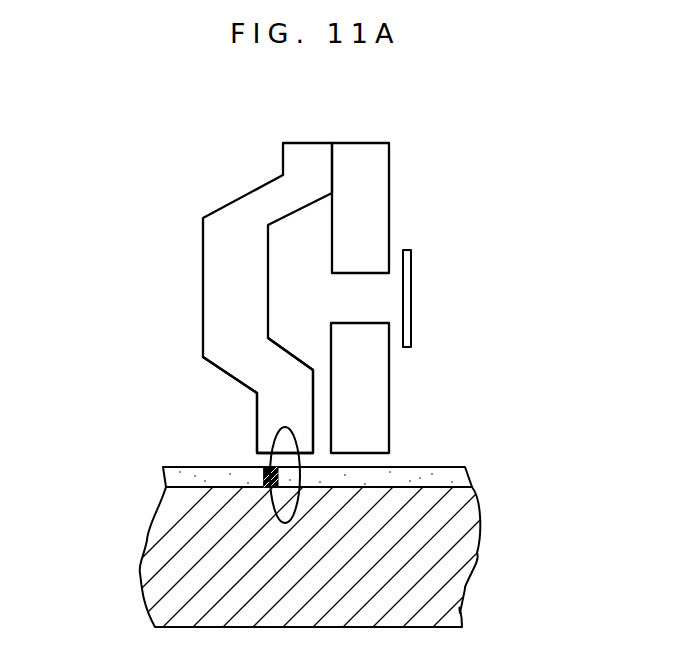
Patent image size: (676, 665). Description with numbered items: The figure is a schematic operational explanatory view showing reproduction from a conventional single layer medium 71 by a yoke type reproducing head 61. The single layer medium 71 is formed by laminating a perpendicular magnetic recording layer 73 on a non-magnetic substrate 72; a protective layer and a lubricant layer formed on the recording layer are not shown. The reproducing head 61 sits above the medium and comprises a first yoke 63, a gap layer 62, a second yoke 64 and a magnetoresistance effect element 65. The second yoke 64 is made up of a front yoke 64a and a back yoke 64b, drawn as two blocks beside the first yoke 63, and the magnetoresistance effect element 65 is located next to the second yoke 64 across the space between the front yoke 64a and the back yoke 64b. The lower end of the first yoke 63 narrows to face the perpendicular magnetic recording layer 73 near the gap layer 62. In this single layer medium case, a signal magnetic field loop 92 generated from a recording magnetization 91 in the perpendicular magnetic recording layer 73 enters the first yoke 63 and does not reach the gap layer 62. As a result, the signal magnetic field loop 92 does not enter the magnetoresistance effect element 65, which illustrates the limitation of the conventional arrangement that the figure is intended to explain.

The reproducing head 61 is at (445, 130).
The gap layer 62 is at (318, 390).
The first yoke 63 is at (225, 262).
The second yoke 64 is at (520, 157).
The front yoke 64a is at (368, 380).
The back yoke 64b is at (365, 187).
The magnetoresistance effect element 65 is at (403, 294).
The single layer medium 71 is at (72, 465).
The non-magnetic substrate 72 is at (165, 570).
The perpendicular magnetic recording layer 73 is at (173, 478).
The recording magnetization 91 is at (266, 467).
The signal magnetic field loop 92 is at (300, 442).